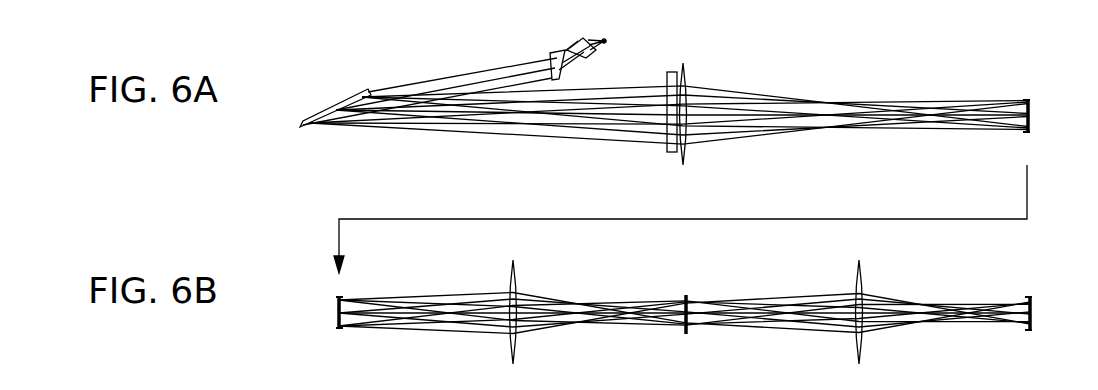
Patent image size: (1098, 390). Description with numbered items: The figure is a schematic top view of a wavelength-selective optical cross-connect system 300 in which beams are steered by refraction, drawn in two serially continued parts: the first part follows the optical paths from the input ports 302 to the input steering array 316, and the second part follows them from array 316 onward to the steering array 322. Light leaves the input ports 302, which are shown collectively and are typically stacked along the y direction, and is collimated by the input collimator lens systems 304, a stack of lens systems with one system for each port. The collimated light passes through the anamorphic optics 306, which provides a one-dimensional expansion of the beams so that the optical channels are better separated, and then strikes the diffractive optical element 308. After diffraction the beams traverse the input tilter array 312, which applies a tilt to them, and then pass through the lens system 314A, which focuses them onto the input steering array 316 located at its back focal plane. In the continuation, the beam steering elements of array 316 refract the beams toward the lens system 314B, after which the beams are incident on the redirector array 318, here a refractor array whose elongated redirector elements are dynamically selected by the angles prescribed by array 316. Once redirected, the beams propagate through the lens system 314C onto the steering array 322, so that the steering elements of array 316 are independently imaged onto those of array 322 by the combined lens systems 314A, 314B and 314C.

In FIG. 6A, the wavelength-selective optical cross-connect system 300 is at (357, 40).
In FIG. 6B, the wavelength-selective optical cross-connect system 300 is at (339, 194).
In FIG. 6A, the input ports 302 is at (621, 42).
In FIG. 6A, the input collimator lens systems 304 is at (590, 35).
In FIG. 6A, the anamorphic optics 306 is at (434, 70).
In FIG. 6A, the diffractive optical element 308 is at (663, 110).
In FIG. 6A, the input tilter array 312 is at (651, 122).
In FIG. 6A, the lens system 314A is at (710, 120).
In FIG. 6A, the input steering array 316 is at (1024, 133).
In FIG. 6B, the input steering array 316 is at (676, 329).
In FIG. 6B, the lens system 314B is at (542, 317).
In FIG. 6B, the redirector array 318 is at (686, 330).
In FIG. 6B, the lens system 314C is at (830, 318).
In FIG. 6B, the steering array 322 is at (1034, 332).